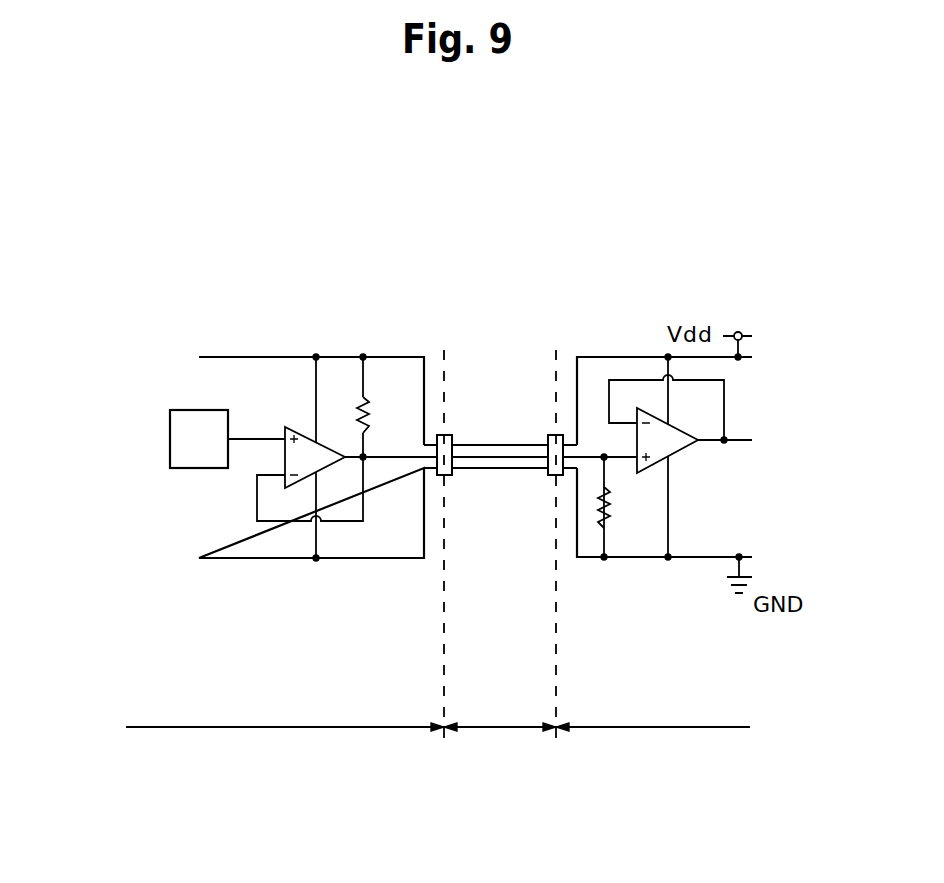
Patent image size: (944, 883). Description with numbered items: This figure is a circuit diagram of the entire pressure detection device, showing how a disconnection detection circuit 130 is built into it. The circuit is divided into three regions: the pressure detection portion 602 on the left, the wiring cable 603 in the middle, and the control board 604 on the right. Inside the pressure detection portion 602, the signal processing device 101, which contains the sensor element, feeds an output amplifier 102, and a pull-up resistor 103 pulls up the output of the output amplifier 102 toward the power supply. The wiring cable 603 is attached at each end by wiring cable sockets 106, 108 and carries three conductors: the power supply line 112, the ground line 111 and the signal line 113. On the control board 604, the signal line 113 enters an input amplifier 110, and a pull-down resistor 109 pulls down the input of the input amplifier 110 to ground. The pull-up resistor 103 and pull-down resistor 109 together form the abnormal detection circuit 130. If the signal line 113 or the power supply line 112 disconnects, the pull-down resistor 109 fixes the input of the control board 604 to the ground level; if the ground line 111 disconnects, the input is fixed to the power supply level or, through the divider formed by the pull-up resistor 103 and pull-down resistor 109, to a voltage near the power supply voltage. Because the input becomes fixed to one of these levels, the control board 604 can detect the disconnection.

The signal processing device 101 is at (170, 425).
The output amplifier 102 is at (295, 423).
The pull-up resistor 103 is at (366, 398).
The wiring cable socket 106 is at (453, 477).
The wiring cable socket 108 is at (547, 477).
The pull-down resistor 109 is at (608, 520).
The input amplifier 110 is at (680, 450).
The GND line 111 is at (486, 470).
The power supply line 112 is at (488, 440).
The signal line 113 is at (513, 455).
The disconnection detection circuit 130 is at (353, 323).
The pressure detection portion 602 is at (285, 716).
The wiring cable 603 is at (500, 716).
The control board 604 is at (653, 716).